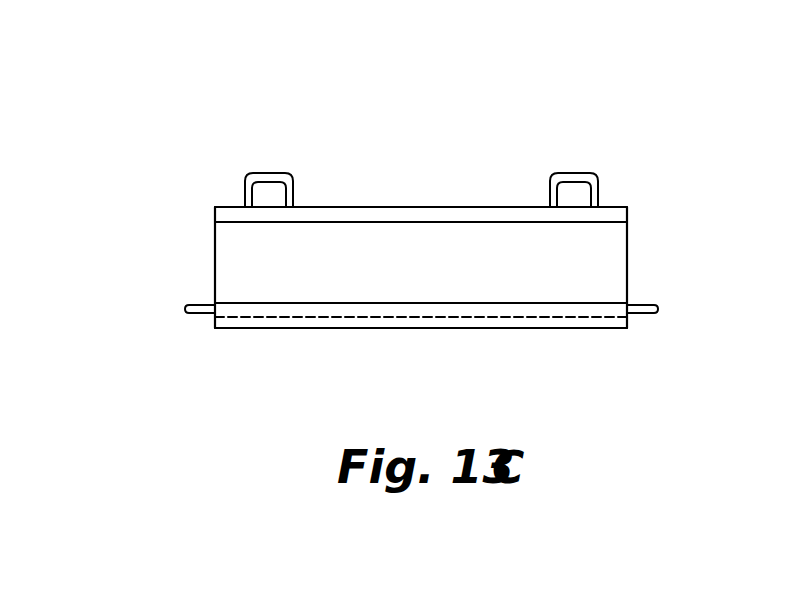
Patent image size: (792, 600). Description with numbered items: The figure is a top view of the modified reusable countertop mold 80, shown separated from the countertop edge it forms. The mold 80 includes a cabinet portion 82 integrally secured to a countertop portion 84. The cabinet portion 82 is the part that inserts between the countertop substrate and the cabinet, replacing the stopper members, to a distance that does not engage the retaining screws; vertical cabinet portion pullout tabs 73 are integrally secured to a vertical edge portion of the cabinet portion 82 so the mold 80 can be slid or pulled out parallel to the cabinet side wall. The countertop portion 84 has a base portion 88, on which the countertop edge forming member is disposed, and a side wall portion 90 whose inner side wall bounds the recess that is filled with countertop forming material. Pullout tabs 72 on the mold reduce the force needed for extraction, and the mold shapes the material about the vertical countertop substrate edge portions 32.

The modified reusable countertop mold 80 is at (420, 201).
The pullout tabs 72 is at (269, 173).
The countertop portion 84 is at (215, 272).
The cabinet portion 82 is at (357, 332).
The base portion 88 is at (615, 262).
The side wall portion 90 is at (627, 222).
The countertop substrate edge portions 32 is at (568, 304).
The vertical cabinet portion pullout tabs 73 is at (185, 310).